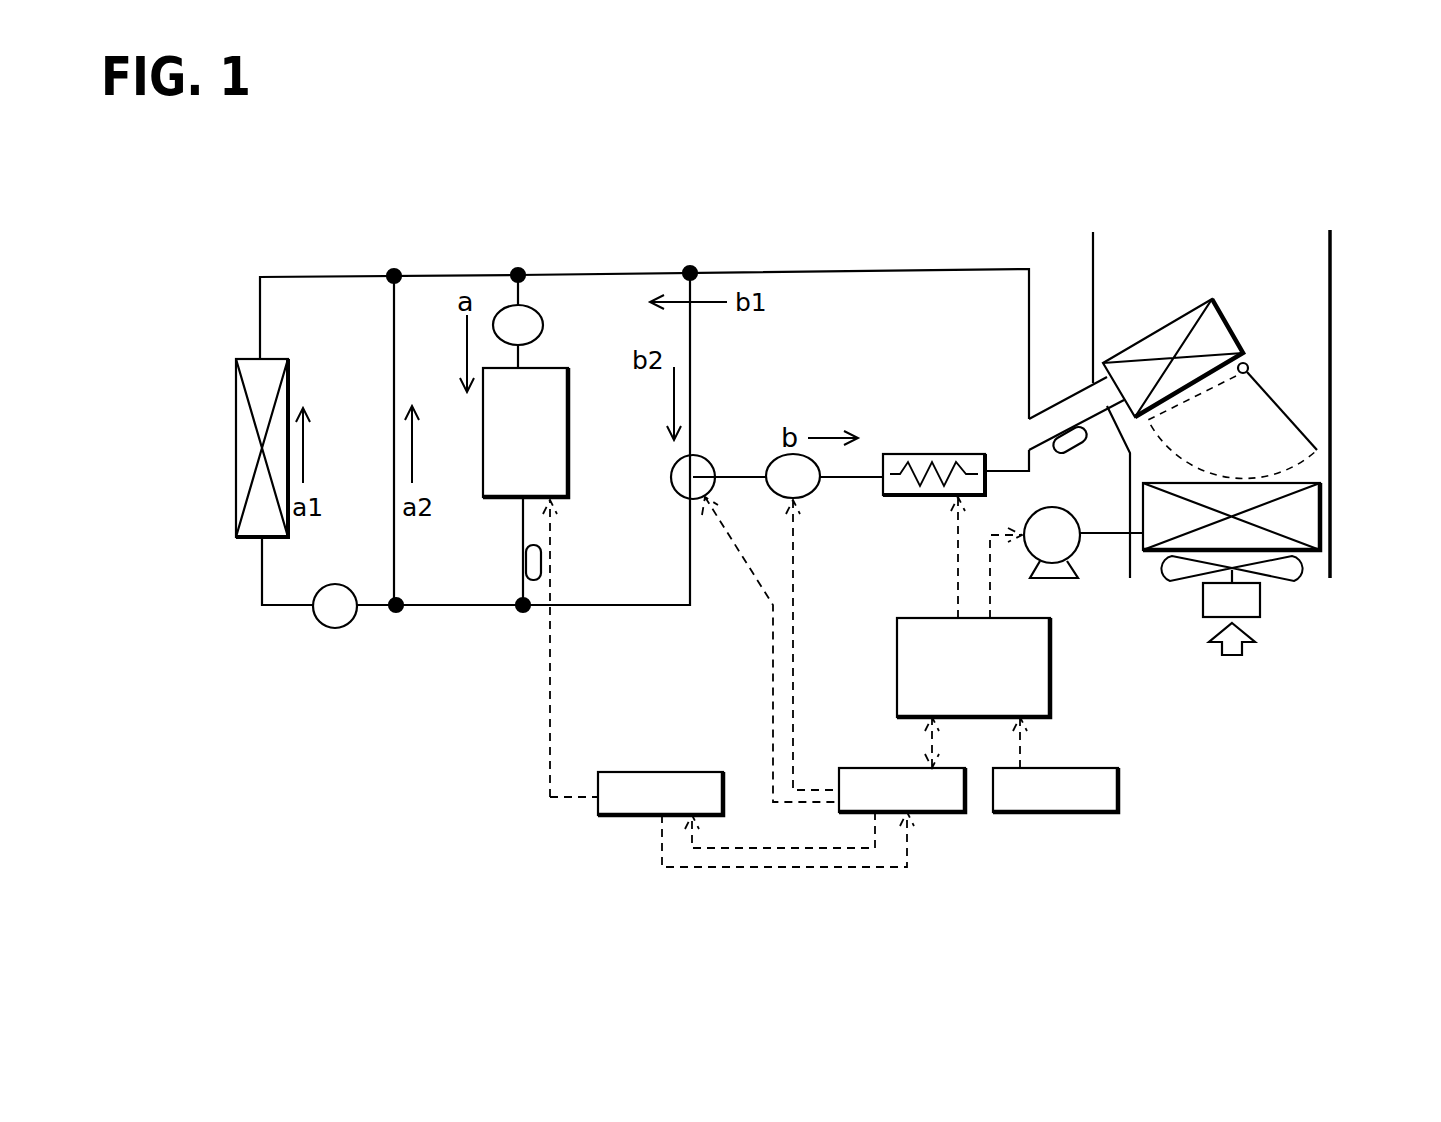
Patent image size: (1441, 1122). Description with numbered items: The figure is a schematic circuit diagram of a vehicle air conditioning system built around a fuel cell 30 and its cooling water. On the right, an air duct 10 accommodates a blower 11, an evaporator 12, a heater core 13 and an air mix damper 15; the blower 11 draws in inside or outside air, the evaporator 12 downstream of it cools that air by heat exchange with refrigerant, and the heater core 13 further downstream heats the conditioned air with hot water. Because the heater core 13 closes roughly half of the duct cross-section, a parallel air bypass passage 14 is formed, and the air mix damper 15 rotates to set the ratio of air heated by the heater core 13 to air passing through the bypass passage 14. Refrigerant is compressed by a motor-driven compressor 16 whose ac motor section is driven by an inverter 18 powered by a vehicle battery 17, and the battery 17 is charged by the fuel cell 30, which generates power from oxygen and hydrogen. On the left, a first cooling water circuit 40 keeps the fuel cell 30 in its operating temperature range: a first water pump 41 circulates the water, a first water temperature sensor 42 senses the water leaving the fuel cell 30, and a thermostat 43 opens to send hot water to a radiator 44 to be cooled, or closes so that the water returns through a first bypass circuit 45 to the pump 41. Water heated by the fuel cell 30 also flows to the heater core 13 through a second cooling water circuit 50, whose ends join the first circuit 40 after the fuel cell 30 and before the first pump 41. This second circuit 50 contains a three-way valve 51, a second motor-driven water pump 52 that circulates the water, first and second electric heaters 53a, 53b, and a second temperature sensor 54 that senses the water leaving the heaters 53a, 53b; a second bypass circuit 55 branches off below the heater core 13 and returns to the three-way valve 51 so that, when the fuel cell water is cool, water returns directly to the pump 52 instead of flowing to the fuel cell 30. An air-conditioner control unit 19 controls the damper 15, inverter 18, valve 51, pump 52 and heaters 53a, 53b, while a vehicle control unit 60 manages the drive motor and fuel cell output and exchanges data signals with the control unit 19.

The air duct 10 is at (1330, 262).
The blower 11 is at (1282, 578).
The evaporator 12 is at (1323, 510).
The heater core 13 is at (1140, 335).
The air bypass passage 14 is at (1290, 328).
The air mix damper 15 is at (1290, 415).
The motor-driven compressor 16 is at (1075, 548).
The vehicle battery 17 is at (1090, 812).
The inverter 18 is at (1052, 672).
The air-conditioner control unit 19 is at (945, 812).
The fuel cell 30 is at (500, 497).
The first cooling water circuit 40 is at (455, 275).
The first water pump 41 is at (545, 322).
The first water temperature sensor 42 is at (545, 578).
The thermostat 43 is at (330, 615).
The radiator 44 is at (236, 422).
The first bypass circuit 45 is at (394, 352).
The second cooling water circuit 50 is at (583, 273).
The three-way valve 51 is at (673, 497).
The second motor-driven water pump 52 is at (808, 500).
The first electric heater 53a is at (933, 454).
The second electric heater 53b is at (934, 474).
The second temperature sensor 54 is at (1078, 450).
The second bypass circuit 55 is at (692, 342).
The vehicle control unit 60 is at (680, 772).